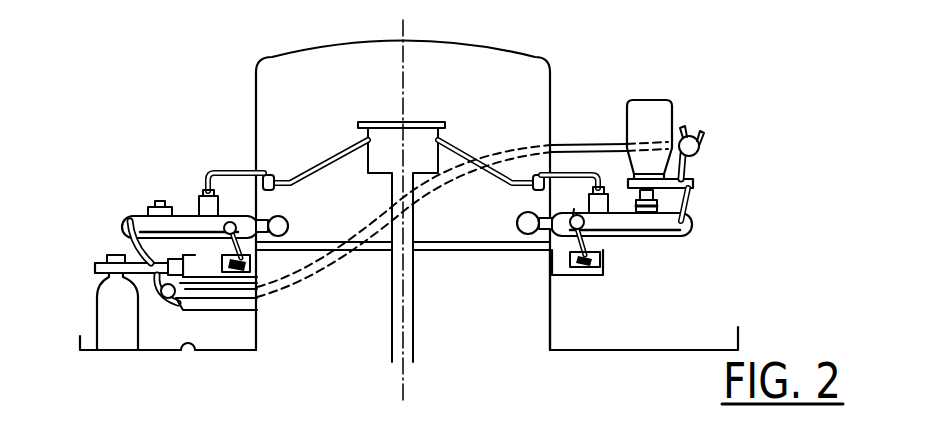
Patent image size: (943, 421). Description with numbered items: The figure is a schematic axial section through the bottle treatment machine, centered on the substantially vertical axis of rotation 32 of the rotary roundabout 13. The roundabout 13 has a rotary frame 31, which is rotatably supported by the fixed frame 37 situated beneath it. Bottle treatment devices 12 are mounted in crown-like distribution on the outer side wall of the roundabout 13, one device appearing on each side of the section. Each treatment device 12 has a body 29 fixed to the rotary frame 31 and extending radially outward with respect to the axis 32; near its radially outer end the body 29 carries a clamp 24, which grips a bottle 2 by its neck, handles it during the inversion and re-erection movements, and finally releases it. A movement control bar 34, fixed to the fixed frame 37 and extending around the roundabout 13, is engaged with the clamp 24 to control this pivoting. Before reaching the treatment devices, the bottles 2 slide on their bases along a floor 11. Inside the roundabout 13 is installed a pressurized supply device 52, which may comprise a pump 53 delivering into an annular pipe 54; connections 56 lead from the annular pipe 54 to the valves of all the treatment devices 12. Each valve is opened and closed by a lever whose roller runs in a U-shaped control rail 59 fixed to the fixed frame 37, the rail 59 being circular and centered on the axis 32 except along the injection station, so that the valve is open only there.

The bottle 2 is at (97, 318).
The floor 11 is at (193, 355).
The bottle treatment device 12 is at (127, 198).
The rotary roundabout 13 is at (236, 107).
The clamp 24 is at (80, 257).
The body of the treatment device 29 is at (118, 222).
The rotary frame 31 is at (256, 92).
The axis of rotation 32 is at (404, 78).
The movement control bar 34 is at (603, 140).
The fixed frame 37 is at (551, 323).
The pressurized supply device 52 is at (322, 147).
The pump 53 is at (387, 143).
The annular pipe 54 is at (274, 192).
The connection 56 is at (569, 172).
The control rail 59 is at (605, 276).